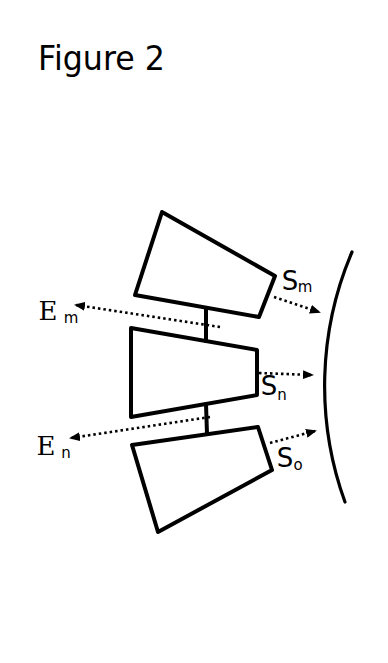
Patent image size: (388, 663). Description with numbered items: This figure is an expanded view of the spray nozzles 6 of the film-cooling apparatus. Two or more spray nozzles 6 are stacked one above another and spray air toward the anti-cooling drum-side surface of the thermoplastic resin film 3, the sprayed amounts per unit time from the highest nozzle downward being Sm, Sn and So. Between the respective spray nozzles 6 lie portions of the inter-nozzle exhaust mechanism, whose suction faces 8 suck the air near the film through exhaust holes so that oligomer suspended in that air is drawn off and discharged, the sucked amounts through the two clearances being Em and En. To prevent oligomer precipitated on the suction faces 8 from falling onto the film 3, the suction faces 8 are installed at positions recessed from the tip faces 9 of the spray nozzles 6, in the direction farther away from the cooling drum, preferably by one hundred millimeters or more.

The thermoplastic resin film 3 is at (344, 262).
The spray nozzle 6 is at (130, 347).
The suction face of inter-nozzle exhaust mechanism 8 is at (205, 340).
The tip face of spray nozzle 9 is at (250, 313).